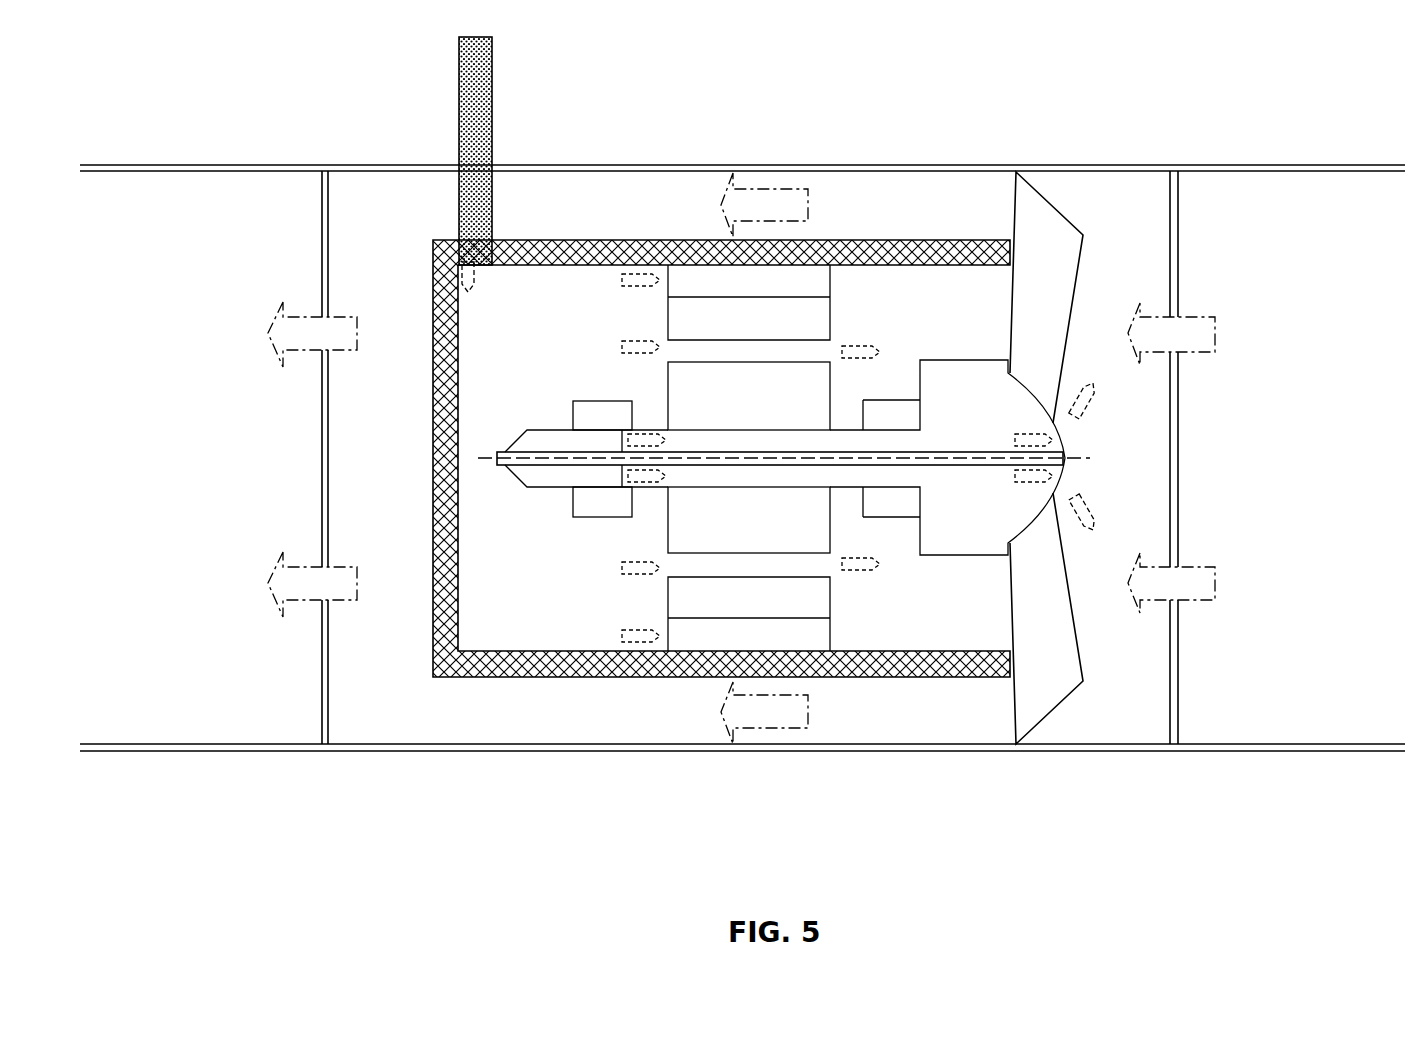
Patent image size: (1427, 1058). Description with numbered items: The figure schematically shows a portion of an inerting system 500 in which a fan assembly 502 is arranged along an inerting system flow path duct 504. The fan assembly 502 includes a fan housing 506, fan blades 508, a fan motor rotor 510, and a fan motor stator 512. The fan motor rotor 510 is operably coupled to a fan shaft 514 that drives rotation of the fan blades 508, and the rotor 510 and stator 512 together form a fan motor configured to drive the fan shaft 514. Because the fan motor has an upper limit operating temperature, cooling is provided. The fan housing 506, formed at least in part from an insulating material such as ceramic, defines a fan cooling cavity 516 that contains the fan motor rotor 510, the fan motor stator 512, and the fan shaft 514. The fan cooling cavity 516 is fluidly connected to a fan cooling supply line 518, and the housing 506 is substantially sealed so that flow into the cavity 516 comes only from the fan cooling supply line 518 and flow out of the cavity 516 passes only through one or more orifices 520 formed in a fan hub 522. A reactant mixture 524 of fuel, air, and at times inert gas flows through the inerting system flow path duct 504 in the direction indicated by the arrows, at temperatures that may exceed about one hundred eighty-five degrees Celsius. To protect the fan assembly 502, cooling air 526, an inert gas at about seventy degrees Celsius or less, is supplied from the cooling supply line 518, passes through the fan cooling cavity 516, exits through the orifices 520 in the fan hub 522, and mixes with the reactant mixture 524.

The inerting system 500 is at (248, 108).
The fan assembly 502 is at (813, 752).
The inerting system flow path duct 504 is at (192, 752).
The fan housing 506 is at (885, 248).
The fan blades 508 is at (1053, 222).
The fan motor rotor 510 is at (771, 409).
The fan motor stator 512 is at (831, 322).
The fan shaft 514 is at (551, 478).
The fan cooling cavity 516 is at (592, 627).
The fan cooling supply line 518 is at (483, 90).
The orifices 520 is at (1072, 471).
The fan hub 522 is at (972, 378).
The reactant mixture 524 is at (766, 190).
The cooling air 526 is at (478, 276).